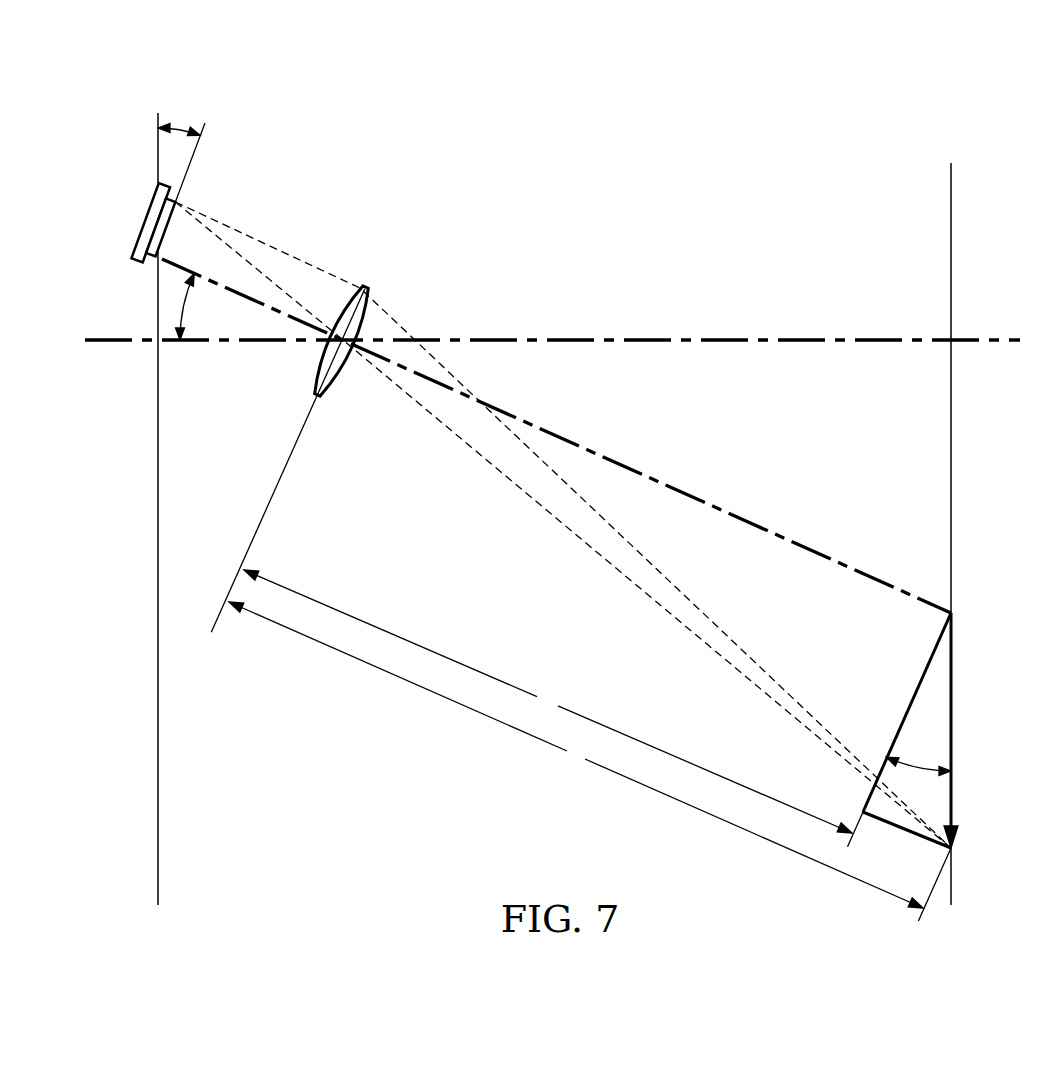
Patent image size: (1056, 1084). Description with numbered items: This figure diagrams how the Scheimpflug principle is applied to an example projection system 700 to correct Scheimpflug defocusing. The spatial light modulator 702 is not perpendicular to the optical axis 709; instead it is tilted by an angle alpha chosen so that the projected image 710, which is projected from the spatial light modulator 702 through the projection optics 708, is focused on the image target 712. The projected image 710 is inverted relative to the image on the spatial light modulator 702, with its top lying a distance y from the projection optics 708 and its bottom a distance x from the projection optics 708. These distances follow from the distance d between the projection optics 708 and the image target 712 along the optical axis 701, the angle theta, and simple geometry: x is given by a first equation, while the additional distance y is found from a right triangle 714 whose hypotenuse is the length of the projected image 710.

The example projection system 700 is at (933, 119).
The optical axis 701 is at (553, 338).
The spatial light modulator 702 is at (143, 225).
The projection optics 708 is at (362, 290).
The optical axis 709 is at (588, 446).
The projected image 710 is at (953, 738).
The image target 712 is at (953, 437).
The right triangle 714 is at (905, 712).